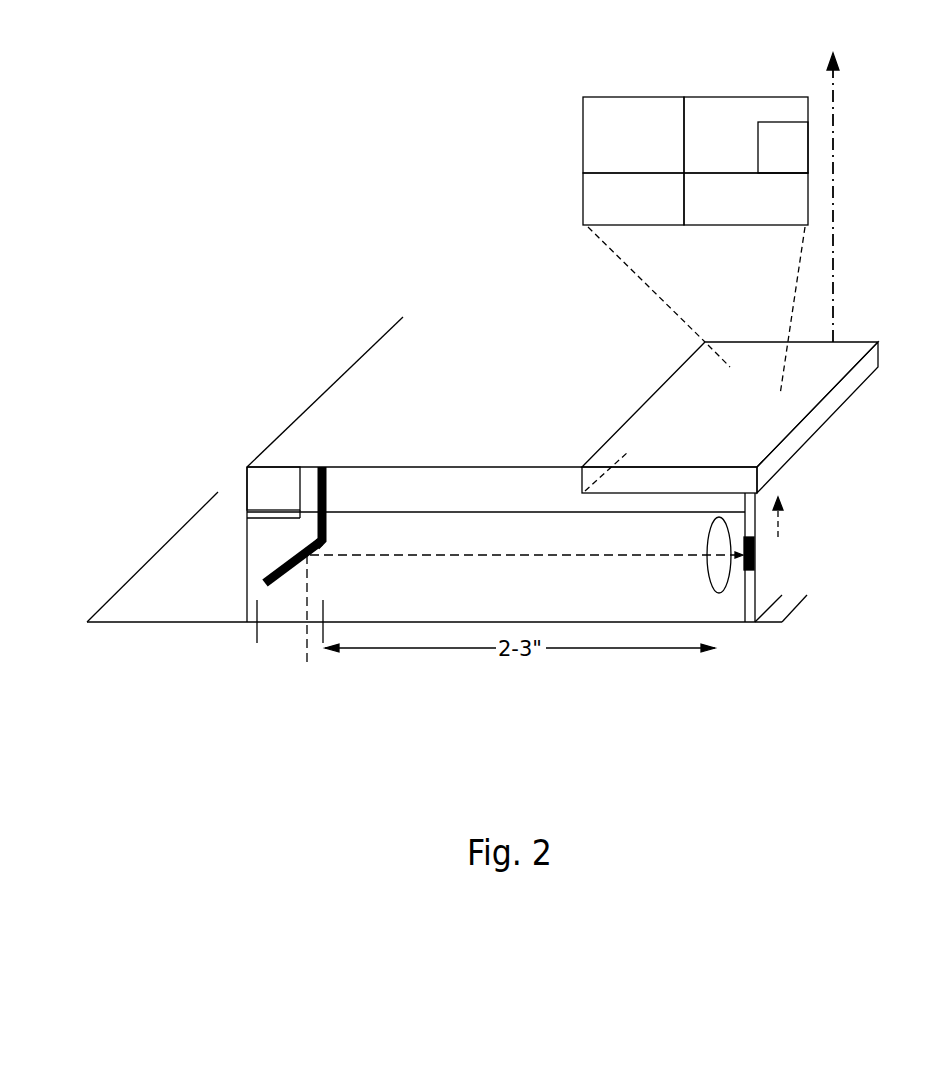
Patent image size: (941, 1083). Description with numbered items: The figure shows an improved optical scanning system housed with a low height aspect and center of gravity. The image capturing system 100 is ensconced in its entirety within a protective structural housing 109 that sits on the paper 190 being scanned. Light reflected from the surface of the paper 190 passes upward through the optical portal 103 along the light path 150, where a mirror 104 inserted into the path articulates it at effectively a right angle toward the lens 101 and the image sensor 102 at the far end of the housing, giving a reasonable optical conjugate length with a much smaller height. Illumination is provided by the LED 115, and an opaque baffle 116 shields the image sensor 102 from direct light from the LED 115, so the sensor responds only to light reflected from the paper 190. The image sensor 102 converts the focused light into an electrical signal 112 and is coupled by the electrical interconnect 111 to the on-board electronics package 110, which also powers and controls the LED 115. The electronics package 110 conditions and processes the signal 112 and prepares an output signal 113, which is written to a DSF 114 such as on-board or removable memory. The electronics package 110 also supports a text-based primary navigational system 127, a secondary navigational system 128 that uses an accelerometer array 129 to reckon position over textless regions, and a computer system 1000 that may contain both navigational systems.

The image capturing system 100 is at (380, 431).
The lens 101 is at (719, 597).
The image sensor 102 is at (757, 555).
The optical portal 103 is at (282, 642).
The mirror 104 is at (267, 577).
The housing 109 is at (367, 350).
The electronics package 110 is at (662, 463).
The electrical interconnect 111 is at (527, 508).
The electrical signal 112 is at (813, 538).
The output signal 113 is at (866, 253).
The DSF 114 is at (672, 198).
The light emitting diode (LED) 115 is at (283, 508).
The opaque baffle 116 is at (322, 465).
The primary navigational system 127 is at (620, 146).
The secondary navigational system 128 is at (718, 146).
The accelerometer array 129 is at (793, 148).
The light path 150 is at (452, 555).
The paper 190 is at (202, 608).
The computer system 1000 is at (727, 221).